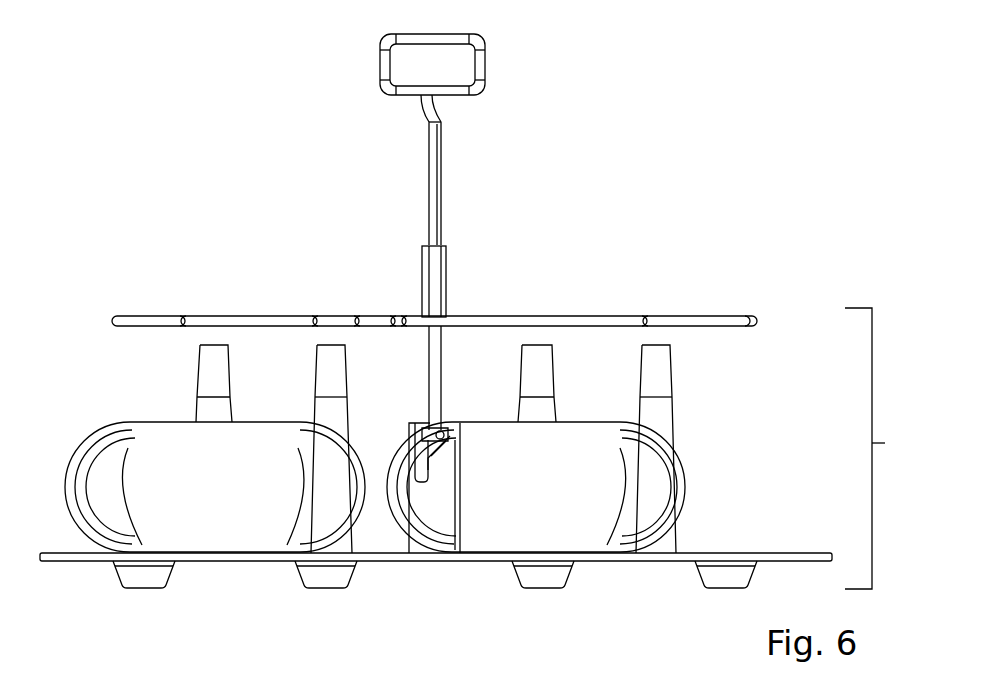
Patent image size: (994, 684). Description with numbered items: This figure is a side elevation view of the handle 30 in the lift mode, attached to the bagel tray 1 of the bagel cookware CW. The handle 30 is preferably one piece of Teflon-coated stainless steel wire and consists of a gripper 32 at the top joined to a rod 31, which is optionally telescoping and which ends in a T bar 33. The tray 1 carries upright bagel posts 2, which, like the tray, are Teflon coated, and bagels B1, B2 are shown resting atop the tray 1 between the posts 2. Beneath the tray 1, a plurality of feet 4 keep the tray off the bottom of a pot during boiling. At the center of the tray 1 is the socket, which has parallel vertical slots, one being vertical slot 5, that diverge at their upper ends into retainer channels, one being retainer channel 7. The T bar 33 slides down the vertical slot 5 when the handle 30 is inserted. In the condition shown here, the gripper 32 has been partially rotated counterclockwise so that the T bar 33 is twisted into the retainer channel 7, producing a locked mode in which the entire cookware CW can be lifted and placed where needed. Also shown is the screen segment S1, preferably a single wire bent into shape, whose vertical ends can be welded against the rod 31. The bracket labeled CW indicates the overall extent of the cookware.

The bagel tray 1 is at (812, 555).
The post 2 is at (664, 375).
The feet 4 is at (746, 573).
The vertical slot 5 is at (424, 428).
The retainer channel 7 is at (450, 436).
The handle 30 is at (352, 128).
The rod 31 is at (441, 196).
The gripper 32 is at (486, 43).
The T bar 33 is at (441, 430).
The screen segment S1 is at (724, 319).
The bagel B1 is at (688, 469).
The bagel B2 is at (116, 438).
The cookware CW is at (883, 448).